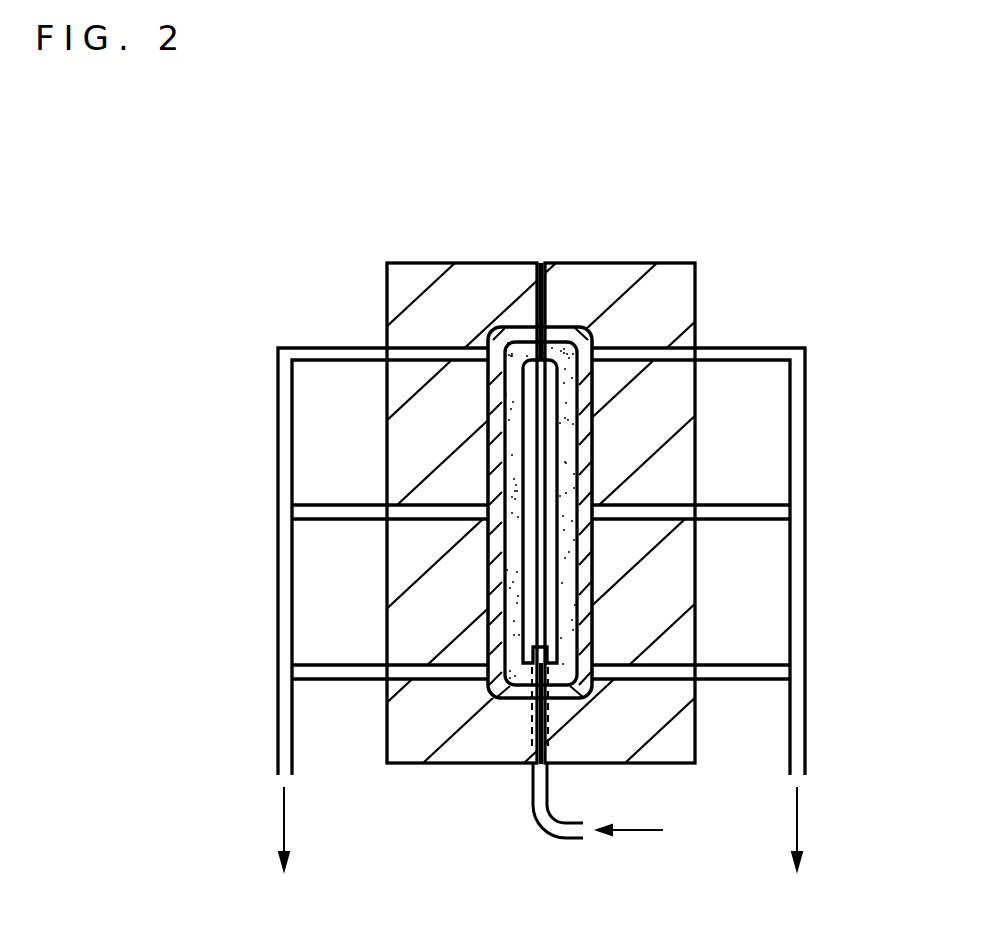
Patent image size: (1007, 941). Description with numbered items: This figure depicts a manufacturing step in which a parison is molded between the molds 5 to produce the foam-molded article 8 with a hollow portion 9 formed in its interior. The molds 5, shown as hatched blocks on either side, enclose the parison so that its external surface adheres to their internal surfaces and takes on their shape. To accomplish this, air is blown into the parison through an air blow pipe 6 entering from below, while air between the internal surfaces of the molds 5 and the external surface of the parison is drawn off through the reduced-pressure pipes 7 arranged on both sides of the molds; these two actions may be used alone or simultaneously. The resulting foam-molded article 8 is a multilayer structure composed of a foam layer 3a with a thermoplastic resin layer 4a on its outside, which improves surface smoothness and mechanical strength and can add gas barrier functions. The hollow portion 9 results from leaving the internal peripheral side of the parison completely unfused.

The foam layer 3a is at (567, 400).
The thermoplastic resin layer 4a is at (594, 478).
The molds 5 is at (412, 292).
The air blow pipe 6 is at (533, 812).
The reduced-pressure pipe 7 is at (278, 437).
The foam-molded article 8 is at (562, 333).
The hollow portion 9 is at (545, 557).